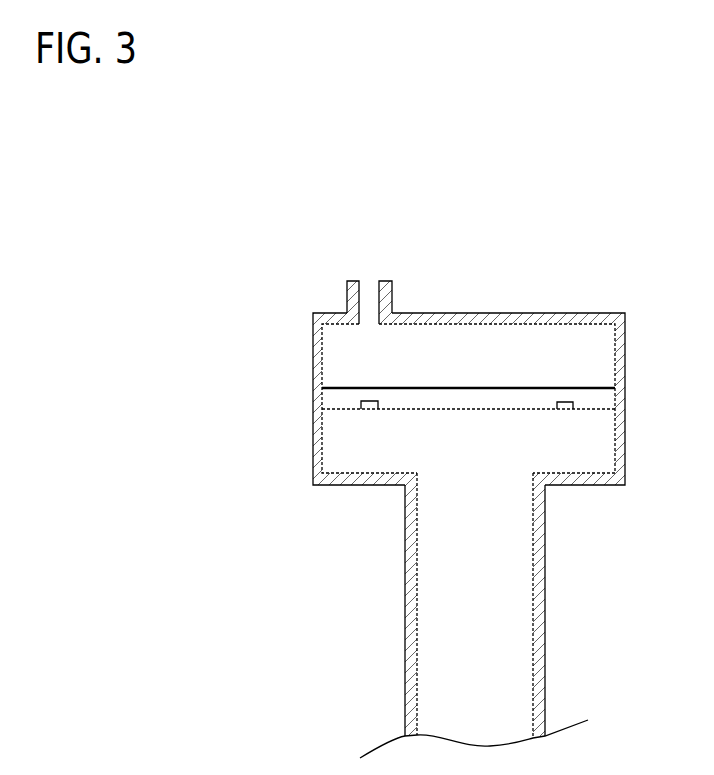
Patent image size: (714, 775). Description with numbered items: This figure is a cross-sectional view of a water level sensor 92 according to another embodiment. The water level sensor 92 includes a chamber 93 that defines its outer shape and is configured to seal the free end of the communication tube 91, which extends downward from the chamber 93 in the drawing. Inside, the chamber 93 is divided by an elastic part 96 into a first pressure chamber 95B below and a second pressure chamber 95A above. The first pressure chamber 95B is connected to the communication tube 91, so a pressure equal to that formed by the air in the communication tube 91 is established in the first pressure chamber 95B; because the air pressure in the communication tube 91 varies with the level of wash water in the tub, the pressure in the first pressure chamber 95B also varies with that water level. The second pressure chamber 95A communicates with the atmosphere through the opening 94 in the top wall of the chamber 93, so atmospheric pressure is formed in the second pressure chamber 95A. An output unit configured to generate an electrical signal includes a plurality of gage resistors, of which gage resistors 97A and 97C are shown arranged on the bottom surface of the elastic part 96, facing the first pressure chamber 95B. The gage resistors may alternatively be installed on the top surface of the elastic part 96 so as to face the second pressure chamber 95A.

The communication tube 91 is at (541, 634).
The water level sensor 92 is at (593, 283).
The chamber 93 is at (626, 430).
The opening 94 is at (376, 290).
The second pressure chamber 95A is at (444, 351).
The first pressure chamber 95B is at (400, 452).
The elastic part 96 is at (332, 392).
The gage resistor 97A is at (367, 410).
The gage resistor 97C is at (576, 404).